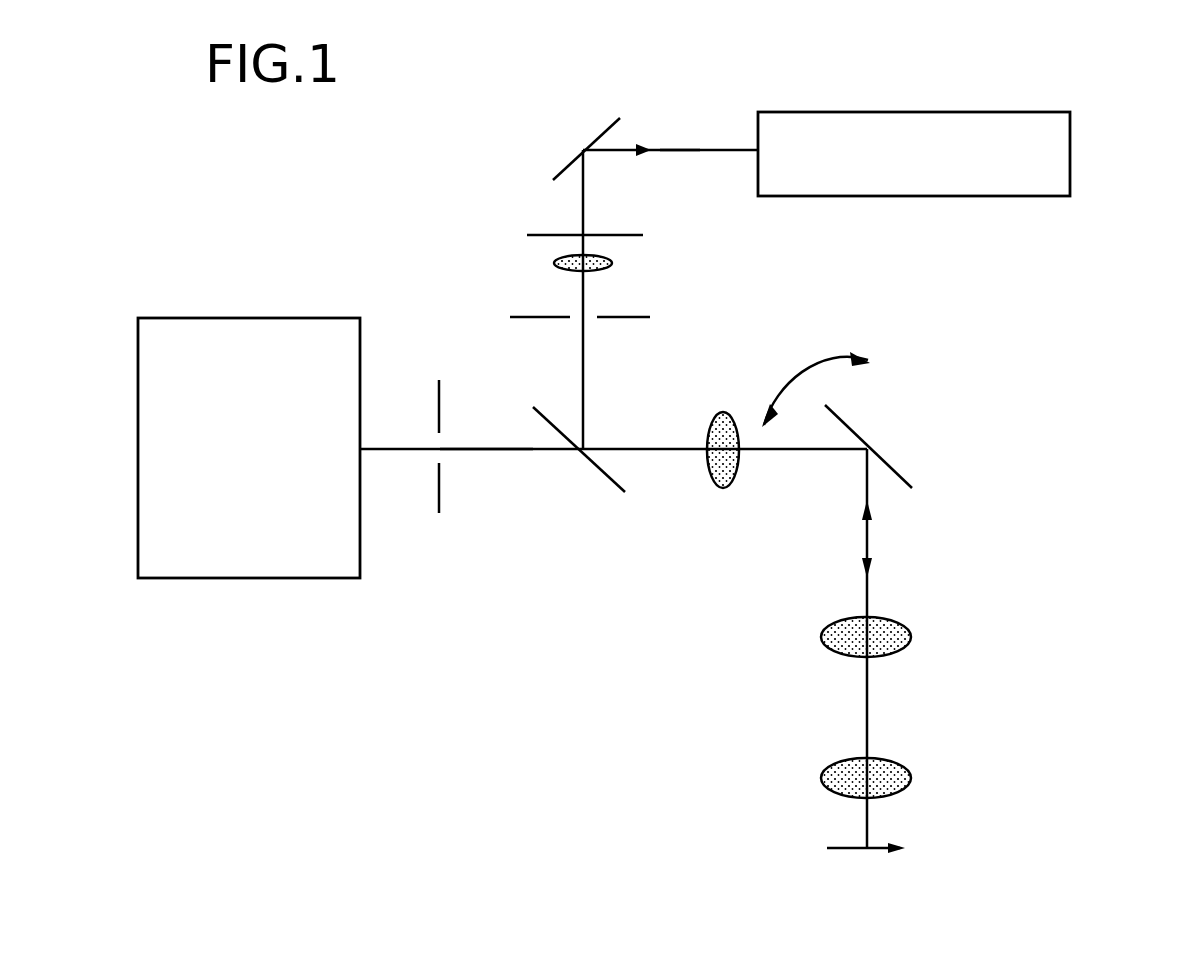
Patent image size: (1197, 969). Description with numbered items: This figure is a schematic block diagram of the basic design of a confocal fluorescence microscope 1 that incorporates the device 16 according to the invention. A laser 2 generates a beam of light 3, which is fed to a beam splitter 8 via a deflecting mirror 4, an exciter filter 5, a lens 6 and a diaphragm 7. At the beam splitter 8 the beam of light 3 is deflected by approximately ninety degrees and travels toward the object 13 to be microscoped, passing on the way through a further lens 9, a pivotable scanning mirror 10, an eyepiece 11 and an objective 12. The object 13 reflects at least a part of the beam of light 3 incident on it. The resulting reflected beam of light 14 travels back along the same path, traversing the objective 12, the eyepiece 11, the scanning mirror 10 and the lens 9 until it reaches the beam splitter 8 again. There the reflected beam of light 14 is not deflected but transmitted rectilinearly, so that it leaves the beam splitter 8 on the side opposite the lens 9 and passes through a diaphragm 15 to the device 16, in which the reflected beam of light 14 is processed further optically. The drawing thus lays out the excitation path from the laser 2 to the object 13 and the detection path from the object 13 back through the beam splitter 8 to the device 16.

The confocal fluorescence microscope 1 is at (1040, 500).
The laser 2 is at (942, 135).
The beam of light 3 is at (682, 150).
The deflecting mirror 4 is at (583, 150).
The exciter filter 5 is at (556, 235).
The lens 6 is at (565, 270).
The diaphragm 7 is at (658, 288).
The beam splitter 8 is at (617, 485).
The further lens 9 is at (720, 412).
The pivotable scanning mirror 10 is at (860, 432).
The eyepiece 11 is at (905, 650).
The objective 12 is at (895, 762).
The object 13 is at (848, 852).
The reflected beam of light 14 is at (502, 449).
The diaphragm 15 is at (438, 484).
The device 16 is at (203, 473).